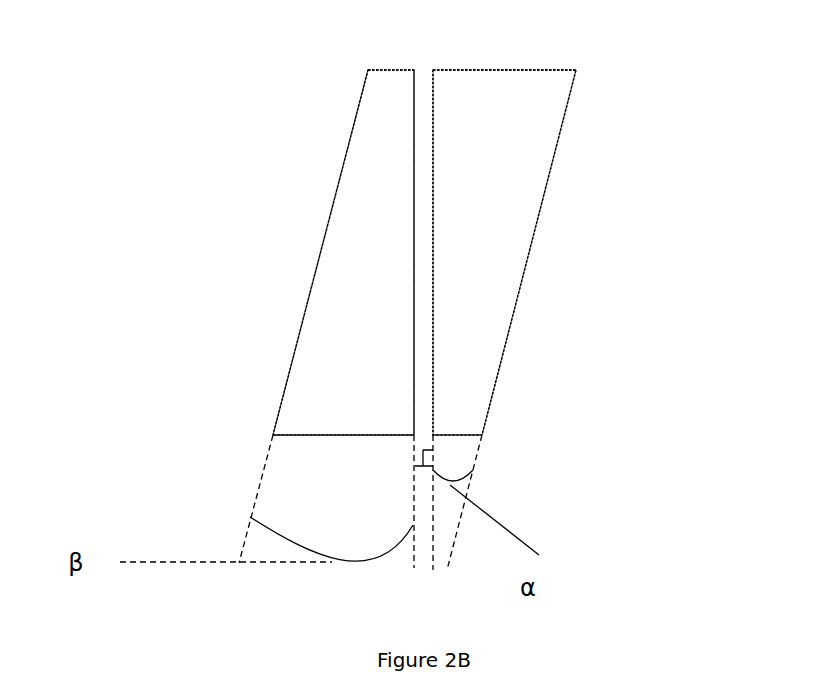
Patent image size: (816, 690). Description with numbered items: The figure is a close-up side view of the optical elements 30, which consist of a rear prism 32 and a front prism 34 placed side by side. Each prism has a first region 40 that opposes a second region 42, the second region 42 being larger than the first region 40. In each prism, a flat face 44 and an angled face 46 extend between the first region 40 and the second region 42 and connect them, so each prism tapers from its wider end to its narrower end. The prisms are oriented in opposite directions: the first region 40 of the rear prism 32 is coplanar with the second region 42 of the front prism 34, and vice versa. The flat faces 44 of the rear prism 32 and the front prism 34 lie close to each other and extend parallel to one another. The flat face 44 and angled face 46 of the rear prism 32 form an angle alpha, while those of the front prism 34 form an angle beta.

The optical elements 30 is at (118, 108).
The rear prism 32 is at (543, 457).
The front prism 34 is at (215, 438).
The first region 40 is at (388, 68).
The second region 42 is at (513, 69).
The flat face 44 is at (415, 183).
The angled face 46 is at (328, 218).